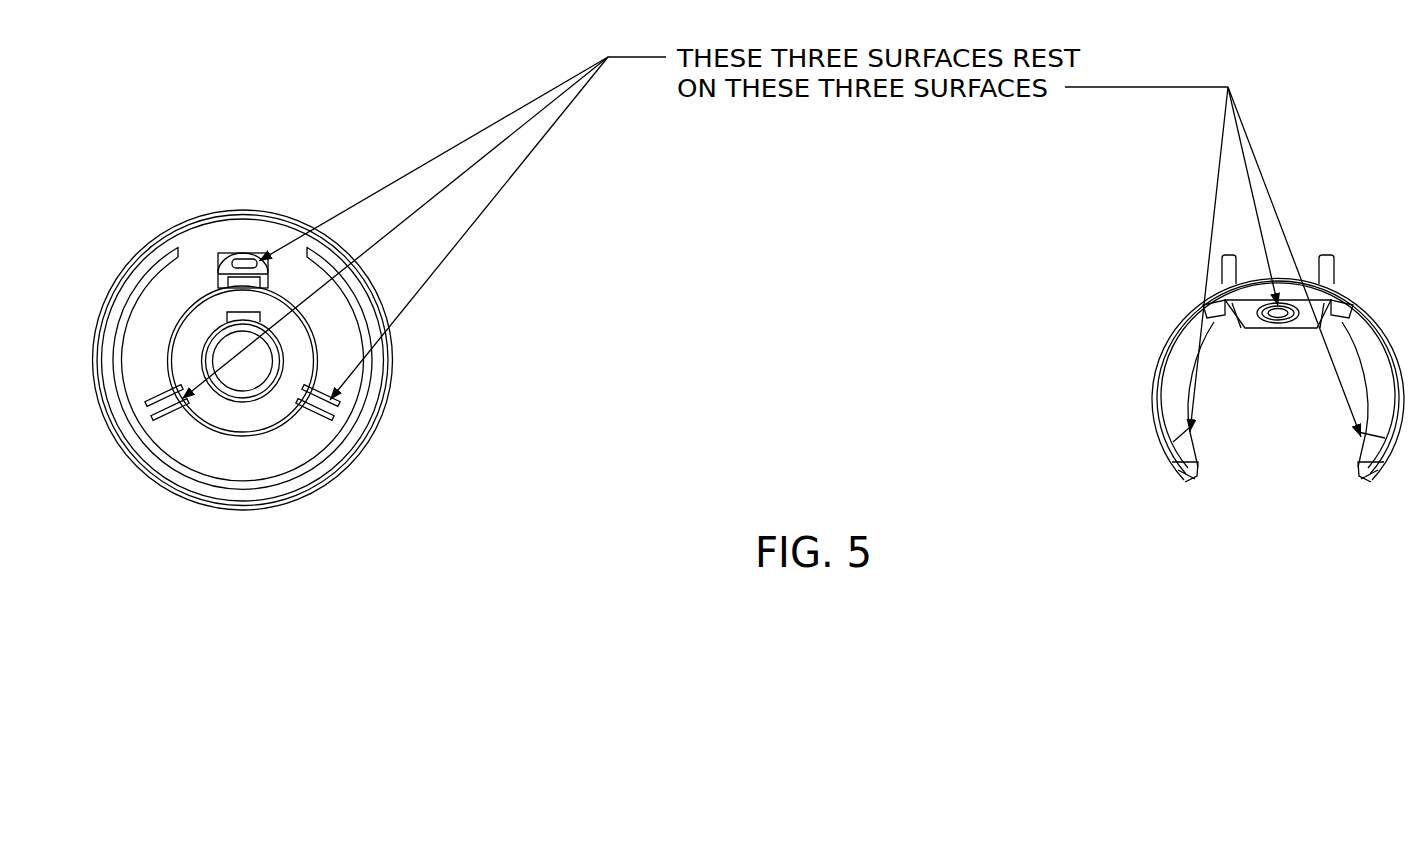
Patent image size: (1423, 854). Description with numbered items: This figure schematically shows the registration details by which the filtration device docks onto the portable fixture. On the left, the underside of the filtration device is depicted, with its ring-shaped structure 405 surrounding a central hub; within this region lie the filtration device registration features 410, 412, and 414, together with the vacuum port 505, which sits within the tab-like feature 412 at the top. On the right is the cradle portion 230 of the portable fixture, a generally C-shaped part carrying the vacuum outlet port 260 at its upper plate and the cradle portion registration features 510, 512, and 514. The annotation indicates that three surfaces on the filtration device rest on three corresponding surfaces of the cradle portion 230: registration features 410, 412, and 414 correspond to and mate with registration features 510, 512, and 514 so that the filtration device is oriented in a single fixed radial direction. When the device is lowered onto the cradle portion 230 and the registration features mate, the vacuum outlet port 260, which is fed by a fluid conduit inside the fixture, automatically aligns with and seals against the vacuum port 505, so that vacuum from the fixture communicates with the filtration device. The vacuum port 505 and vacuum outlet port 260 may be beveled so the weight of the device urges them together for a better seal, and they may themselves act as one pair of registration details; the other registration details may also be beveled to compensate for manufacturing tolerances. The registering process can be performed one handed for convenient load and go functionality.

The mounting ring 405 is at (256, 229).
The registration feature 412 is at (227, 255).
The vacuum port 505 is at (240, 258).
The registration feature 410 is at (157, 413).
The registration feature 414 is at (337, 418).
The cradle portion 230 is at (1372, 320).
The vacuum outlet port 260 is at (1280, 325).
The registration feature 512 is at (1243, 330).
The registration feature 510 is at (1197, 453).
The registration feature 514 is at (1359, 453).